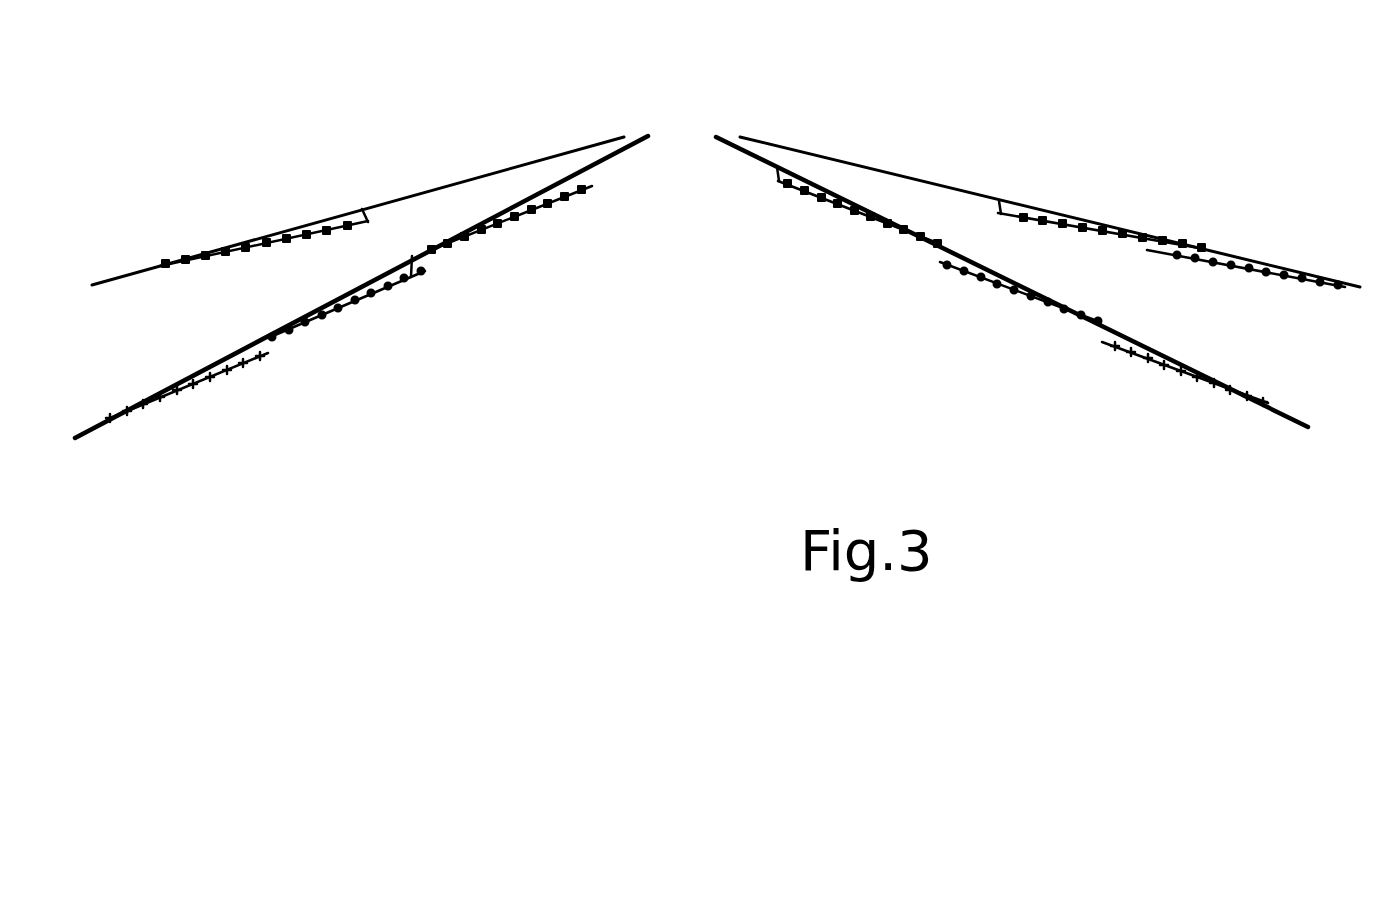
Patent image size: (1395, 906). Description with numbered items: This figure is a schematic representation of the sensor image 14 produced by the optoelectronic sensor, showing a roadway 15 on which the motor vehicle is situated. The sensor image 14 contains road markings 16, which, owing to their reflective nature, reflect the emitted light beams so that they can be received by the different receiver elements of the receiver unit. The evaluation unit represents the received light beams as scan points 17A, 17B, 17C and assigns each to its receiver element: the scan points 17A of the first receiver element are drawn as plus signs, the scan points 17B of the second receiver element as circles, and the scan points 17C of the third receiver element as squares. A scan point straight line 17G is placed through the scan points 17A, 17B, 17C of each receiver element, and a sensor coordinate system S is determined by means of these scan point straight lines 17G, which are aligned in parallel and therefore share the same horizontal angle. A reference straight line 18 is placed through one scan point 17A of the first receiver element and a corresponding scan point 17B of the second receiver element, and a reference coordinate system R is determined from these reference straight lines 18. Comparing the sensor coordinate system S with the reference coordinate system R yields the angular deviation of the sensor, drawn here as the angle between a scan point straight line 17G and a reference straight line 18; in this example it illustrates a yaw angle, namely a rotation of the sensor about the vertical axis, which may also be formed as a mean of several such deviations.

The sensor image 14 is at (152, 471).
The roadway 15 is at (694, 358).
The road markings 16 is at (192, 282).
The scan points of the first receiver element 17A is at (157, 400).
The scan points of the second receiver element 17B is at (322, 320).
The scan points of the third receiver element 17C is at (205, 255).
The scan point straight line 17G is at (318, 228).
The reference straight line 18 is at (540, 160).
The reference coordinate system R is at (793, 130).
The sensor coordinate system S is at (410, 318).